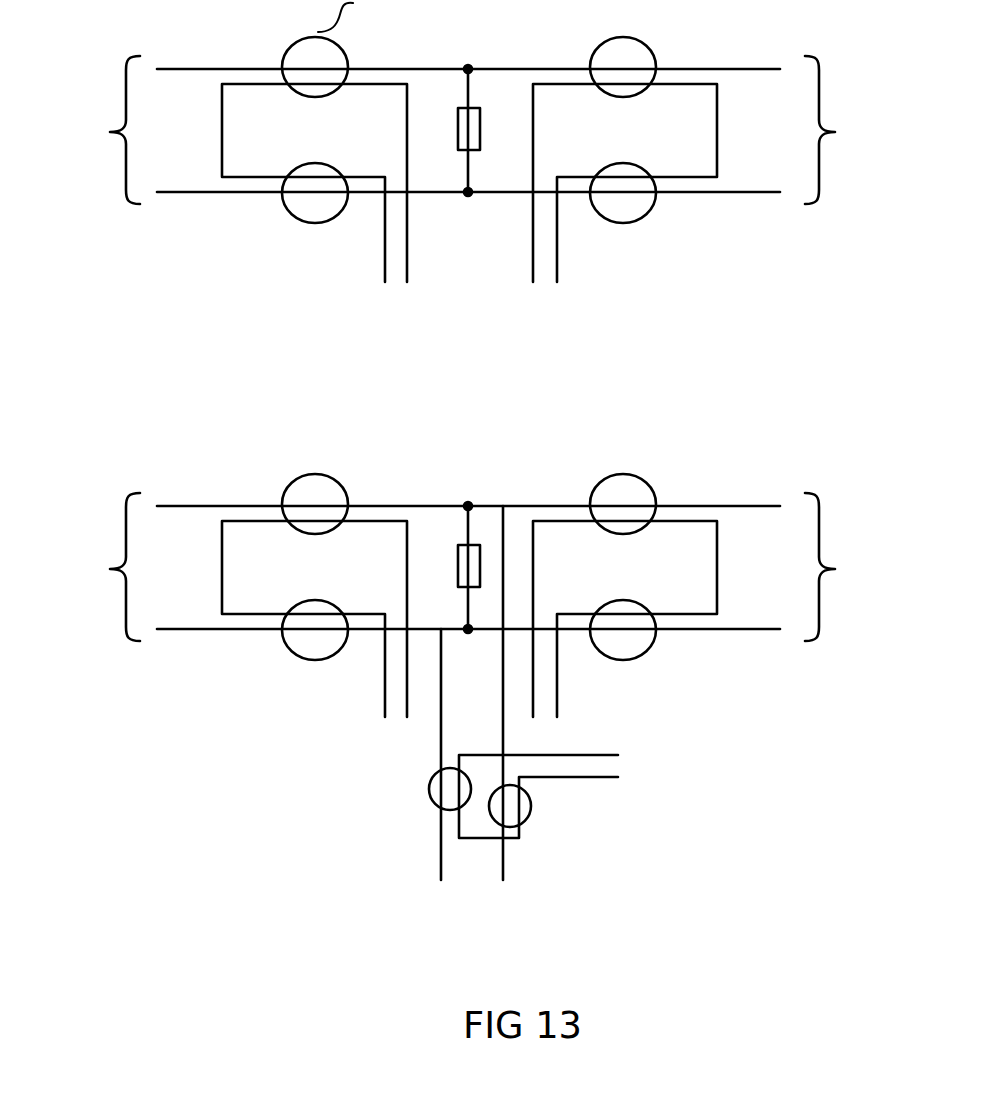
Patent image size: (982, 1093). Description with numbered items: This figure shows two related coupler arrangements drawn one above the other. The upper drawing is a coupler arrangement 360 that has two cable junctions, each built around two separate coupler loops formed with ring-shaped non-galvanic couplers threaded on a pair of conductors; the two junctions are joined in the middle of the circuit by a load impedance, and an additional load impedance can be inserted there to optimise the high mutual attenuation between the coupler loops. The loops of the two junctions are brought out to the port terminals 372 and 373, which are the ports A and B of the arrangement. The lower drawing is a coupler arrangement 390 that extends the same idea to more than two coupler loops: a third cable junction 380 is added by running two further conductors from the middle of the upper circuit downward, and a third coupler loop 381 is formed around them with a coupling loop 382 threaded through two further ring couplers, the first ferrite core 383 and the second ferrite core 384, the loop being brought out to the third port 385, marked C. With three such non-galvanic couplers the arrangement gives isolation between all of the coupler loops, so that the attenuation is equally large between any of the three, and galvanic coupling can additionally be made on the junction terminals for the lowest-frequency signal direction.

The coupler arrangement 360 is at (643, 357).
The port A terminals 372 is at (356, 741).
The port B terminals 373 is at (601, 740).
The cable junction 380 is at (478, 884).
The coupler loop 381 is at (450, 838).
The coupling loop 382 is at (526, 836).
The first ferrite core of coupler 383 is at (428, 780).
The second ferrite core of coupler 384 is at (532, 800).
The port C 385 is at (645, 768).
The coupler arrangement 390 is at (643, 913).